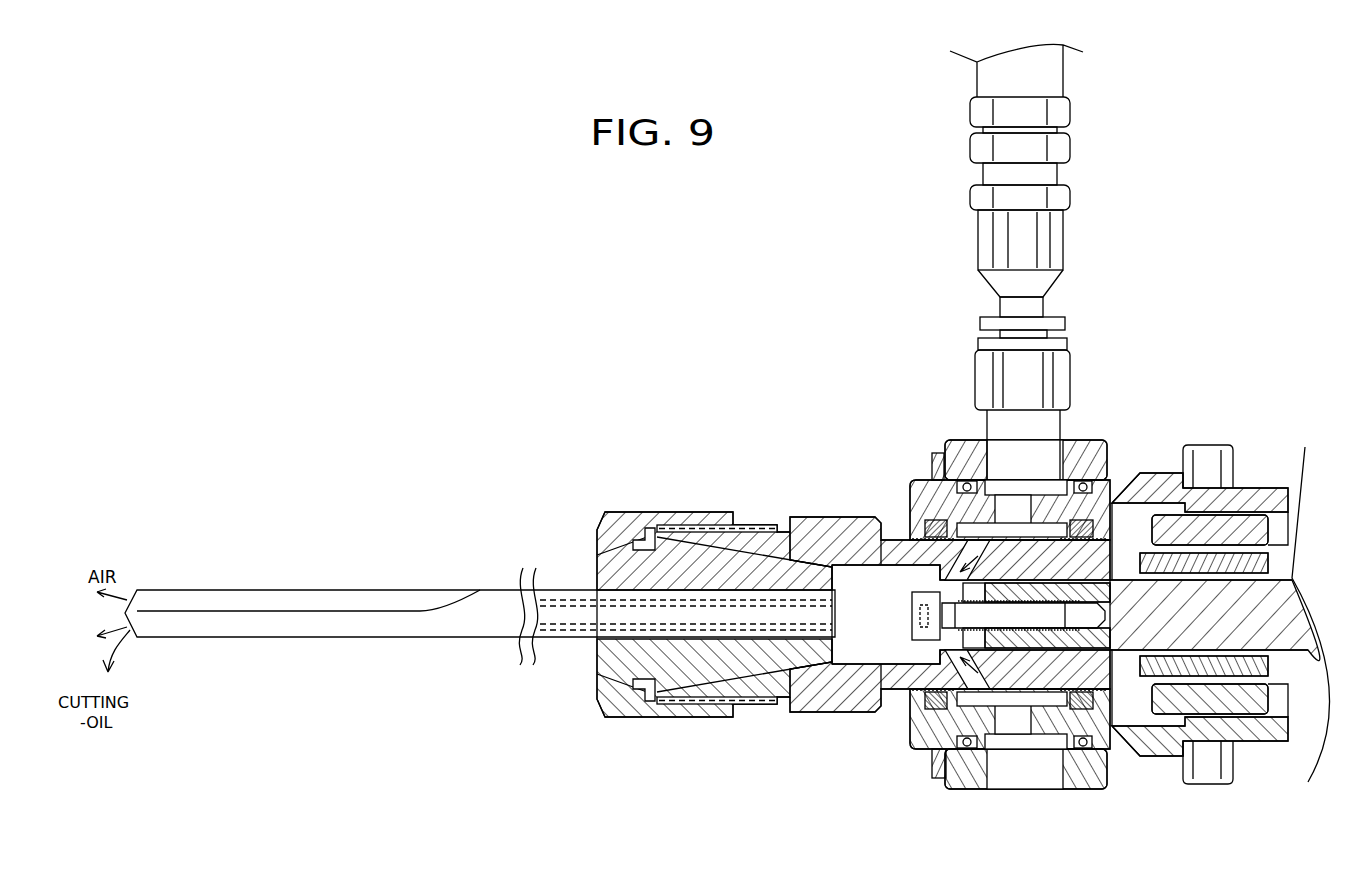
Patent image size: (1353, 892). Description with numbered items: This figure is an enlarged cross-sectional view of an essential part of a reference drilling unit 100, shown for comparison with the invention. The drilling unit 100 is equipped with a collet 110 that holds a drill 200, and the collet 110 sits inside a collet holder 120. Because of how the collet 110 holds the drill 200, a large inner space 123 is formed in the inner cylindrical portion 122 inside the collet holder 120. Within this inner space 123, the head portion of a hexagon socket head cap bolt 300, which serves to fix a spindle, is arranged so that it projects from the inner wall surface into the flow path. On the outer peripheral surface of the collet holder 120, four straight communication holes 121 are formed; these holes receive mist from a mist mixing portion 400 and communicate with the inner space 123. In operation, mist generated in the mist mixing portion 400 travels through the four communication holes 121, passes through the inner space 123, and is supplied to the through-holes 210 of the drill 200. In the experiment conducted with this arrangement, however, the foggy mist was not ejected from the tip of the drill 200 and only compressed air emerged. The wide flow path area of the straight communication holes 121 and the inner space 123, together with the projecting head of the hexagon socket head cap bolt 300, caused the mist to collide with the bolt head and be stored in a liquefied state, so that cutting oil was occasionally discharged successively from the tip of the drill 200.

The drilling unit 100 is at (853, 621).
The collet 110 is at (760, 650).
The collet holder 120 is at (811, 517).
The communication holes 121 is at (927, 527).
The inner cylindrical portion 122 is at (888, 612).
The inner space 123 is at (884, 612).
The drill 200 is at (473, 641).
The through-holes 210 is at (568, 600).
The hexagon socket head cap bolt 300 is at (877, 540).
The mist mixing portion 400 is at (1023, 243).